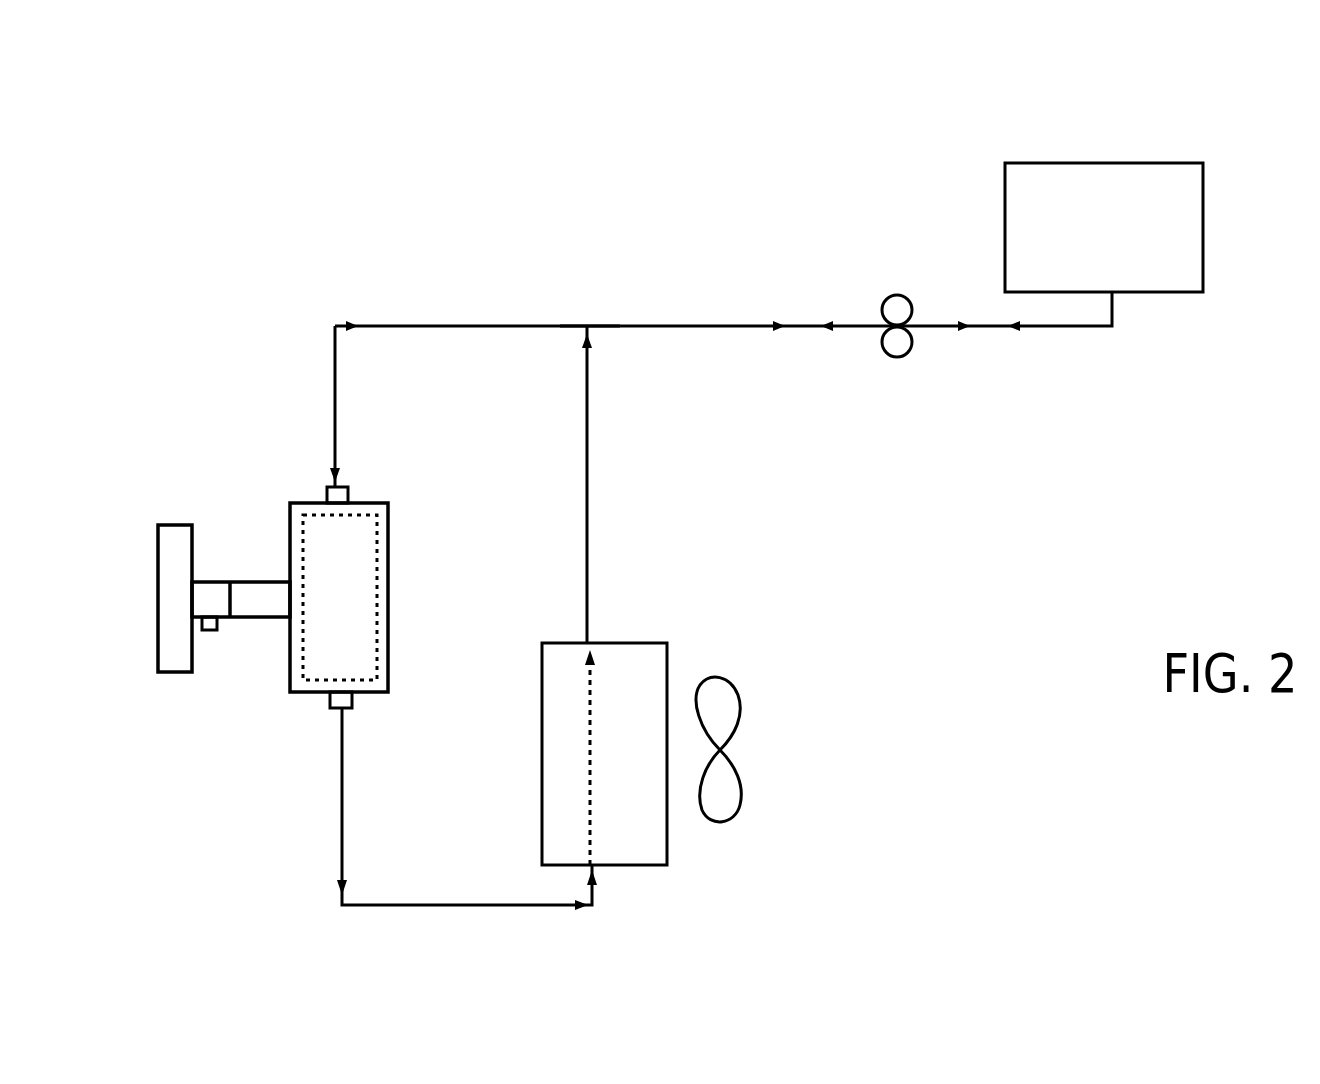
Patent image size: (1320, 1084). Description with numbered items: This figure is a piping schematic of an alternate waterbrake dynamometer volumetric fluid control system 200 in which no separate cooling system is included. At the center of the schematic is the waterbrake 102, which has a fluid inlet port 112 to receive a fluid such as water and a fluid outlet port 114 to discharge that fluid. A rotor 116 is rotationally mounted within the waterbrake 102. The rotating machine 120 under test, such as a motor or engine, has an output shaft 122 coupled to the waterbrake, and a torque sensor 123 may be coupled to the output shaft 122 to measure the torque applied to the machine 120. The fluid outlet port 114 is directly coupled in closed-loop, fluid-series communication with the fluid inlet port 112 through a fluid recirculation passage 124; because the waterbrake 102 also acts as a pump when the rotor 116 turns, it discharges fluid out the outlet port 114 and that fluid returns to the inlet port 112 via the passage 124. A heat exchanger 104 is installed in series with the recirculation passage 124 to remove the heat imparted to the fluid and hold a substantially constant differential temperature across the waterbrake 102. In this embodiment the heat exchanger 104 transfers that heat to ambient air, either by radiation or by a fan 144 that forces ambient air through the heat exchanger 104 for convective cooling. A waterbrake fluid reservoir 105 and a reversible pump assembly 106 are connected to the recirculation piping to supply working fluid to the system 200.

The waterbrake dynamometer volumetric fluid control system 200 is at (427, 205).
The waterbrake 102 is at (388, 545).
The heat exchanger 104 is at (647, 643).
The waterbrake fluid reservoir 105 is at (1005, 170).
The reversible pump assembly 106 is at (893, 295).
The fluid inlet port 112 is at (348, 491).
The fluid outlet port 114 is at (352, 705).
The rotor 116 is at (388, 617).
The rotating machine 120 is at (156, 538).
The output shaft 122 is at (200, 578).
The torque sensor 123 is at (210, 632).
The fluid recirculation passage 124 is at (408, 370).
The fan 144 is at (730, 763).